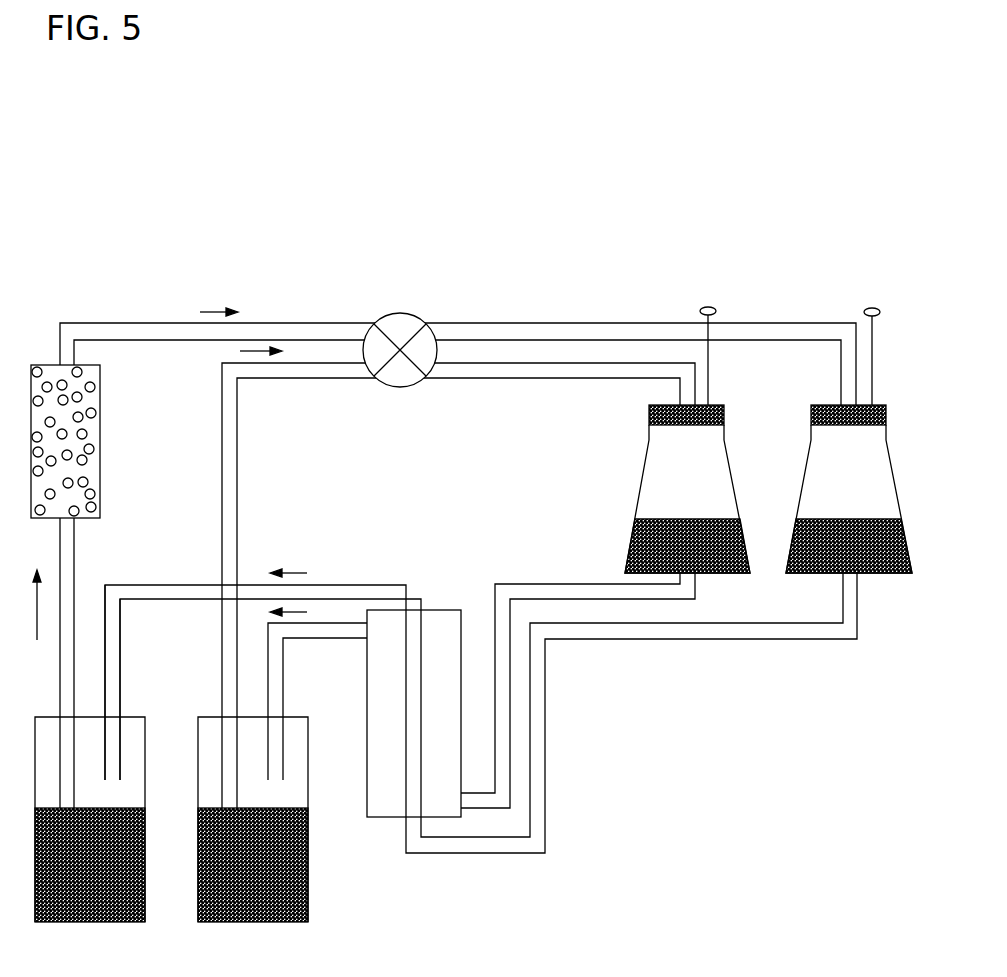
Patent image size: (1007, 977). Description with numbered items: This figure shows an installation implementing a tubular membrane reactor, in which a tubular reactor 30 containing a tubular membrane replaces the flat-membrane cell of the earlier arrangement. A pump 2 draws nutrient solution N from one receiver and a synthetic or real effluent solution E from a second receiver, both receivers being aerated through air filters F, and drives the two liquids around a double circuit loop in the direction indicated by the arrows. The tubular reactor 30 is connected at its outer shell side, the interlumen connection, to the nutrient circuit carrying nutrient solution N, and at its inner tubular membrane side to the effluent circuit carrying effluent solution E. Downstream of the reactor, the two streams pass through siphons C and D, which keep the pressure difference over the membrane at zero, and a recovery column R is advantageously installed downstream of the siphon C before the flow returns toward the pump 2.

The pump 2 is at (413, 313).
The recovery column R is at (100, 437).
The air filters F is at (728, 305).
The nutrient solution N is at (662, 518).
The effluent solution E is at (830, 519).
The siphon C is at (145, 827).
The siphon D is at (308, 820).
The tubular reactor 30 is at (384, 817).